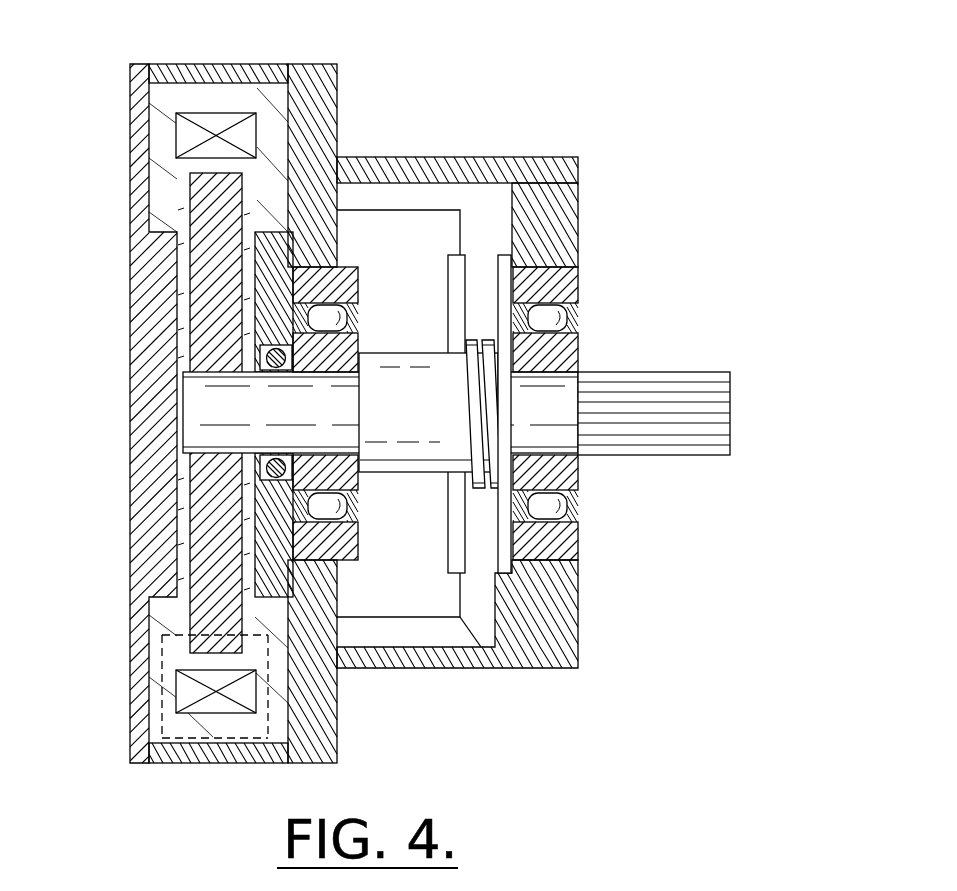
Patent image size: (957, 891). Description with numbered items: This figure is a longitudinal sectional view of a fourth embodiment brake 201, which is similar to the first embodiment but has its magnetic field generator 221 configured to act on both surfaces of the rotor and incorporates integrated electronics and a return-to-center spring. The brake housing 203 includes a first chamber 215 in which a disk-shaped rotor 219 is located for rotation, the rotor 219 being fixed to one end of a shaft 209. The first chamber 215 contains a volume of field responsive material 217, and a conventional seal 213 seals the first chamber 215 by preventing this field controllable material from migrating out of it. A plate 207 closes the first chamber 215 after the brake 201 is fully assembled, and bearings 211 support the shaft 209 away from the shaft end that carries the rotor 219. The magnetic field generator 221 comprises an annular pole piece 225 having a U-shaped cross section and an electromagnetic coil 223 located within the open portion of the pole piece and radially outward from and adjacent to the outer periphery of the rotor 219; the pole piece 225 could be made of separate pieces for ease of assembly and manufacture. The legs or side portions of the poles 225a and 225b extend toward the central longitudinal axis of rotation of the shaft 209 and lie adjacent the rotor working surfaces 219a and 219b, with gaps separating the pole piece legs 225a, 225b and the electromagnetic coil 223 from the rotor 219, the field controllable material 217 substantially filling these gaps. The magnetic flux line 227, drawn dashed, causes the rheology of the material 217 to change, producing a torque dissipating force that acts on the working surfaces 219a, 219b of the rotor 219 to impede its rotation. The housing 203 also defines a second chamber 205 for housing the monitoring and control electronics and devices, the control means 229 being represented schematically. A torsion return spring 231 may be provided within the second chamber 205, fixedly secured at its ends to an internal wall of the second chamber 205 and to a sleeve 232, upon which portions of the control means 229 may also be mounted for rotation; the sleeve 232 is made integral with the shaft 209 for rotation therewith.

The brake 201 is at (598, 97).
The brake housing 203 is at (562, 205).
The second chamber 205 is at (477, 598).
The plate 207 is at (150, 545).
The shaft 209 is at (723, 398).
The bearings 211 is at (481, 408).
The seal 213 is at (312, 500).
The first chamber 215 is at (183, 380).
The field responsive material 217 is at (177, 348).
The rotor 219 is at (218, 187).
The rotor working surface 219a is at (192, 228).
The rotor working surface 219b is at (244, 293).
The magnetic field generator 221 is at (195, 98).
The electromagnetic coil 223 is at (183, 135).
The annular pole piece 225 is at (190, 312).
The pole piece leg 225a is at (157, 612).
The pole piece leg 225b is at (280, 672).
The magnetic flux line 227 is at (202, 773).
The control means 229 is at (462, 620).
The torsion return spring 231 is at (496, 383).
The sleeve 232 is at (383, 437).